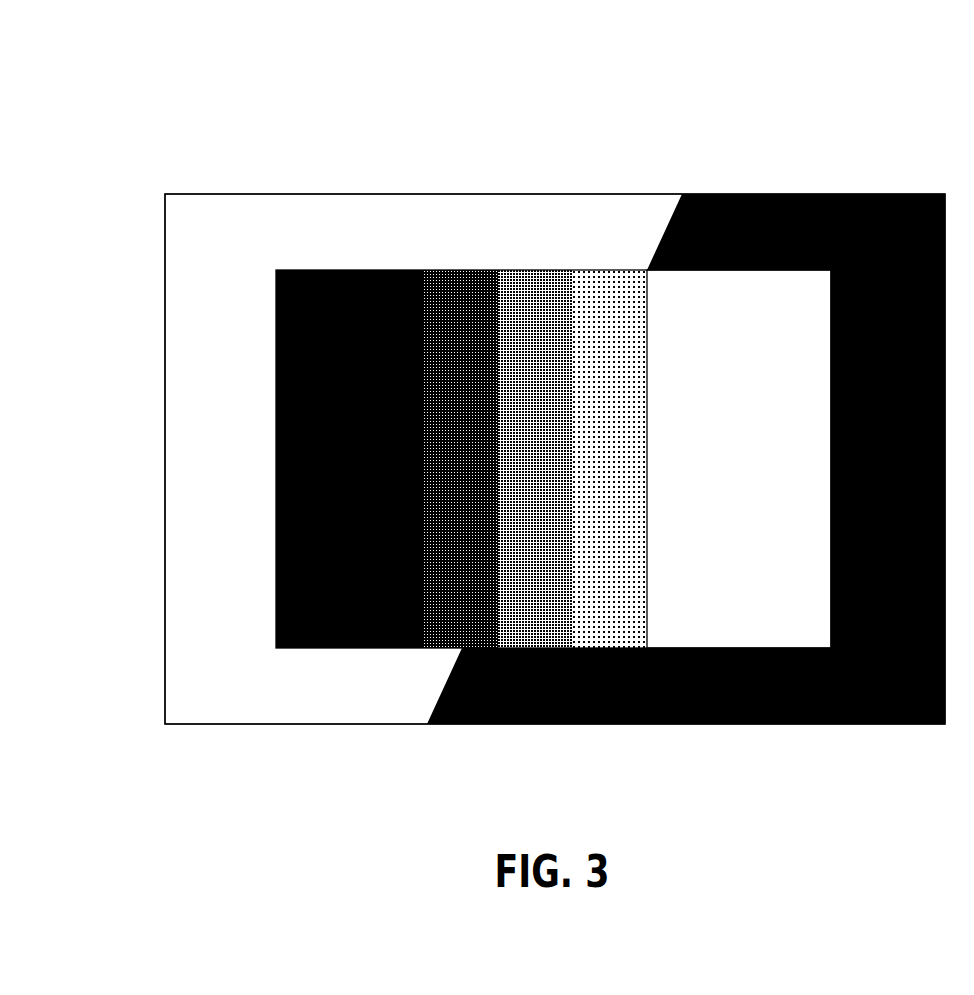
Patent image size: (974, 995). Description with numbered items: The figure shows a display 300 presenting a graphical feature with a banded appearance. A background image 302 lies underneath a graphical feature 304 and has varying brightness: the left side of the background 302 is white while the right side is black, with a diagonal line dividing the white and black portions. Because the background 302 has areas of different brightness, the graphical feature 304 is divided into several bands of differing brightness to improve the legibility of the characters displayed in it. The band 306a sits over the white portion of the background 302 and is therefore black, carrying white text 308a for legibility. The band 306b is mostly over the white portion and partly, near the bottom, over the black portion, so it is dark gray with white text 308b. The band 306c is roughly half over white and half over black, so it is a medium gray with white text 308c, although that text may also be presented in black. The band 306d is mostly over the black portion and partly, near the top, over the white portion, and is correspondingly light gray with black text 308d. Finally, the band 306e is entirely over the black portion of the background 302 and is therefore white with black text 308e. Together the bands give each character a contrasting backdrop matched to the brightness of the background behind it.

The display 300 is at (156, 45).
The background image 302 is at (528, 194).
The graphical feature 304 is at (478, 270).
The band 306a is at (308, 649).
The band 306b is at (438, 649).
The band 306c is at (530, 649).
The band 306d is at (603, 649).
The band 306e is at (725, 649).
The text 308a is at (340, 452).
The text 308b is at (466, 432).
The text 308c is at (533, 447).
The text 308d is at (610, 447).
The text 308e is at (736, 445).